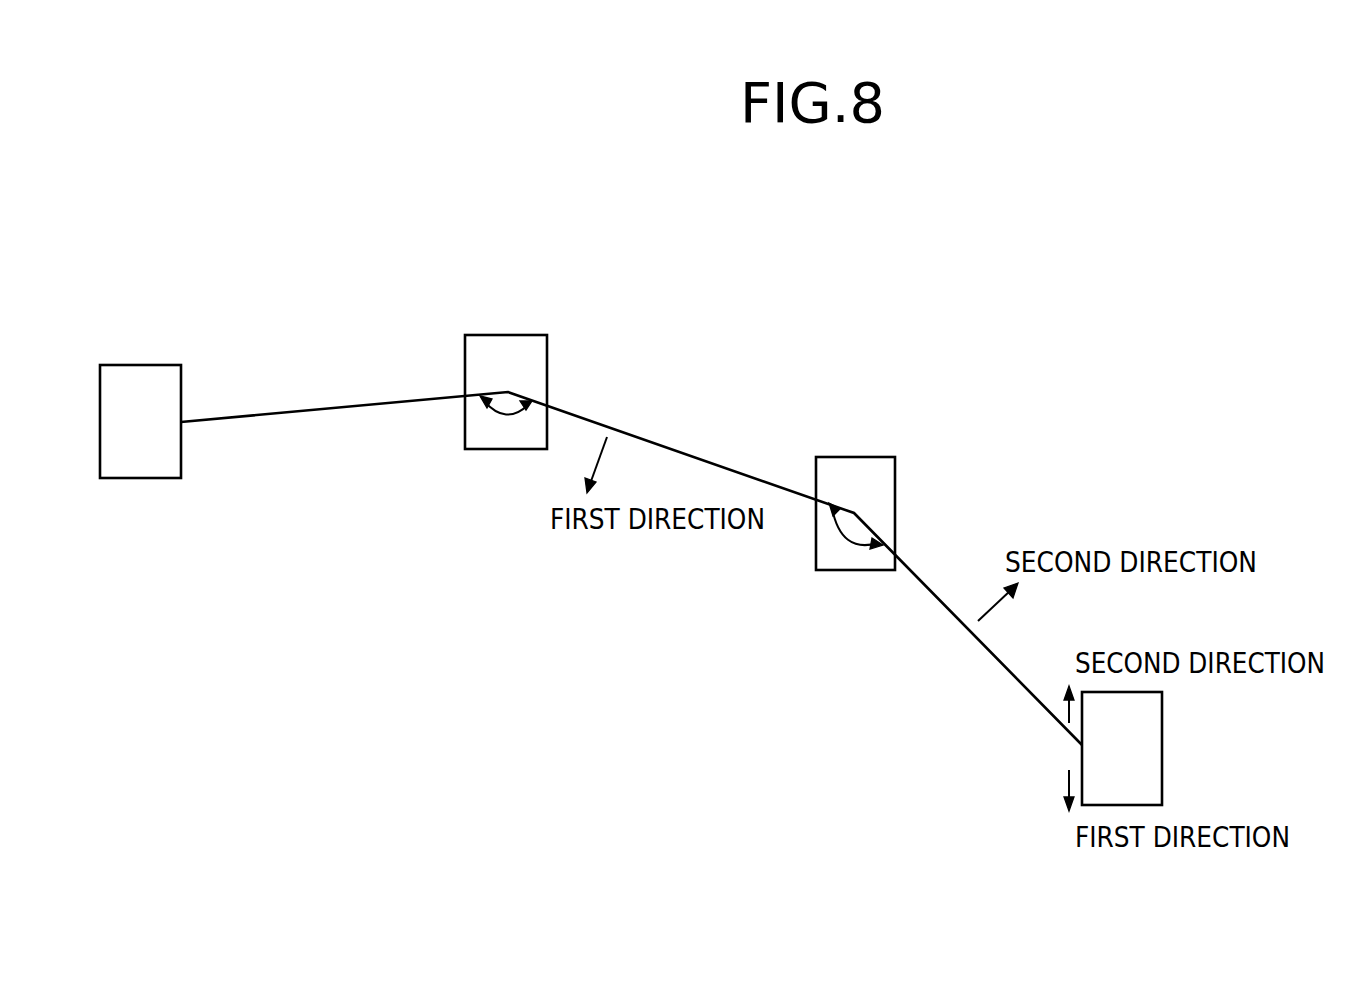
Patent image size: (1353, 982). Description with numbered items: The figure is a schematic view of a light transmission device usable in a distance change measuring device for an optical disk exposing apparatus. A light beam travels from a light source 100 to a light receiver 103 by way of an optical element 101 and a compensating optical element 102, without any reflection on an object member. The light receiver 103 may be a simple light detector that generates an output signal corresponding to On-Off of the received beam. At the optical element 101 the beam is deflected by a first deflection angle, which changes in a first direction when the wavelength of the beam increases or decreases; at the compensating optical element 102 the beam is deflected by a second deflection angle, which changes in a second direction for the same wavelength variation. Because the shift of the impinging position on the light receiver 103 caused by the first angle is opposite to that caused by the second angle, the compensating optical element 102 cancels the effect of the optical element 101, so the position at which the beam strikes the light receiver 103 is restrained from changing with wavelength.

The light source 100 is at (139, 365).
The optical element 101 is at (505, 335).
The compensating optical element 102 is at (850, 457).
The light receiver 103 is at (1162, 742).